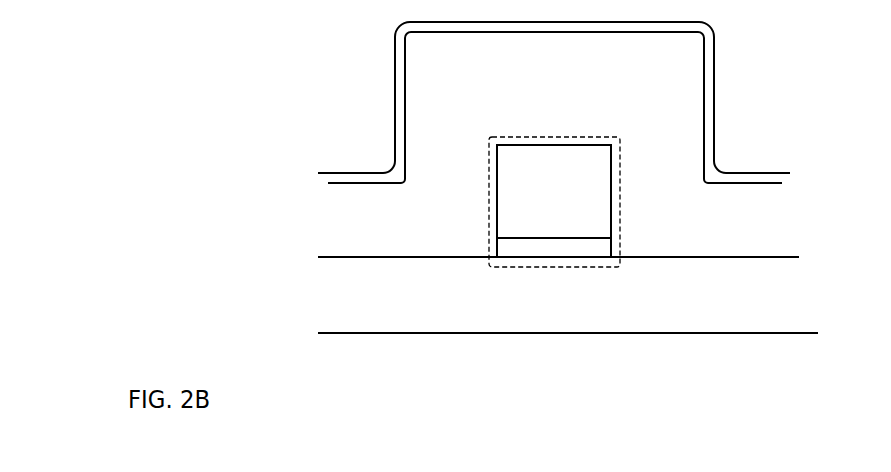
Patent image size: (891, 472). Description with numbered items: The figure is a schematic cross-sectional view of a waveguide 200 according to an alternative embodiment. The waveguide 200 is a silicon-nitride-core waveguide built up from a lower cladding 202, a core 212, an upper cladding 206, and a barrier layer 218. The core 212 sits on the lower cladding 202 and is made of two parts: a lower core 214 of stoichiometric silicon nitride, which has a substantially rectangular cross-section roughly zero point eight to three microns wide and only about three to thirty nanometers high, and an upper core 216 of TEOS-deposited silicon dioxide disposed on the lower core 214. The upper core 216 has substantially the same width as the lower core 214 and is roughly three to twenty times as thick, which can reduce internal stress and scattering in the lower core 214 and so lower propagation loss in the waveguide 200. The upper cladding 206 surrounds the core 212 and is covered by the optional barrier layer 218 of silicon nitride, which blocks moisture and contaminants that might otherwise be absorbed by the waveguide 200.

The waveguide 200 is at (320, 69).
The lower cladding 202 is at (393, 313).
The upper cladding 206 is at (395, 237).
The core 212 is at (553, 136).
The lower core 214 is at (602, 248).
The upper core 216 is at (545, 201).
The barrier layer 218 is at (715, 107).